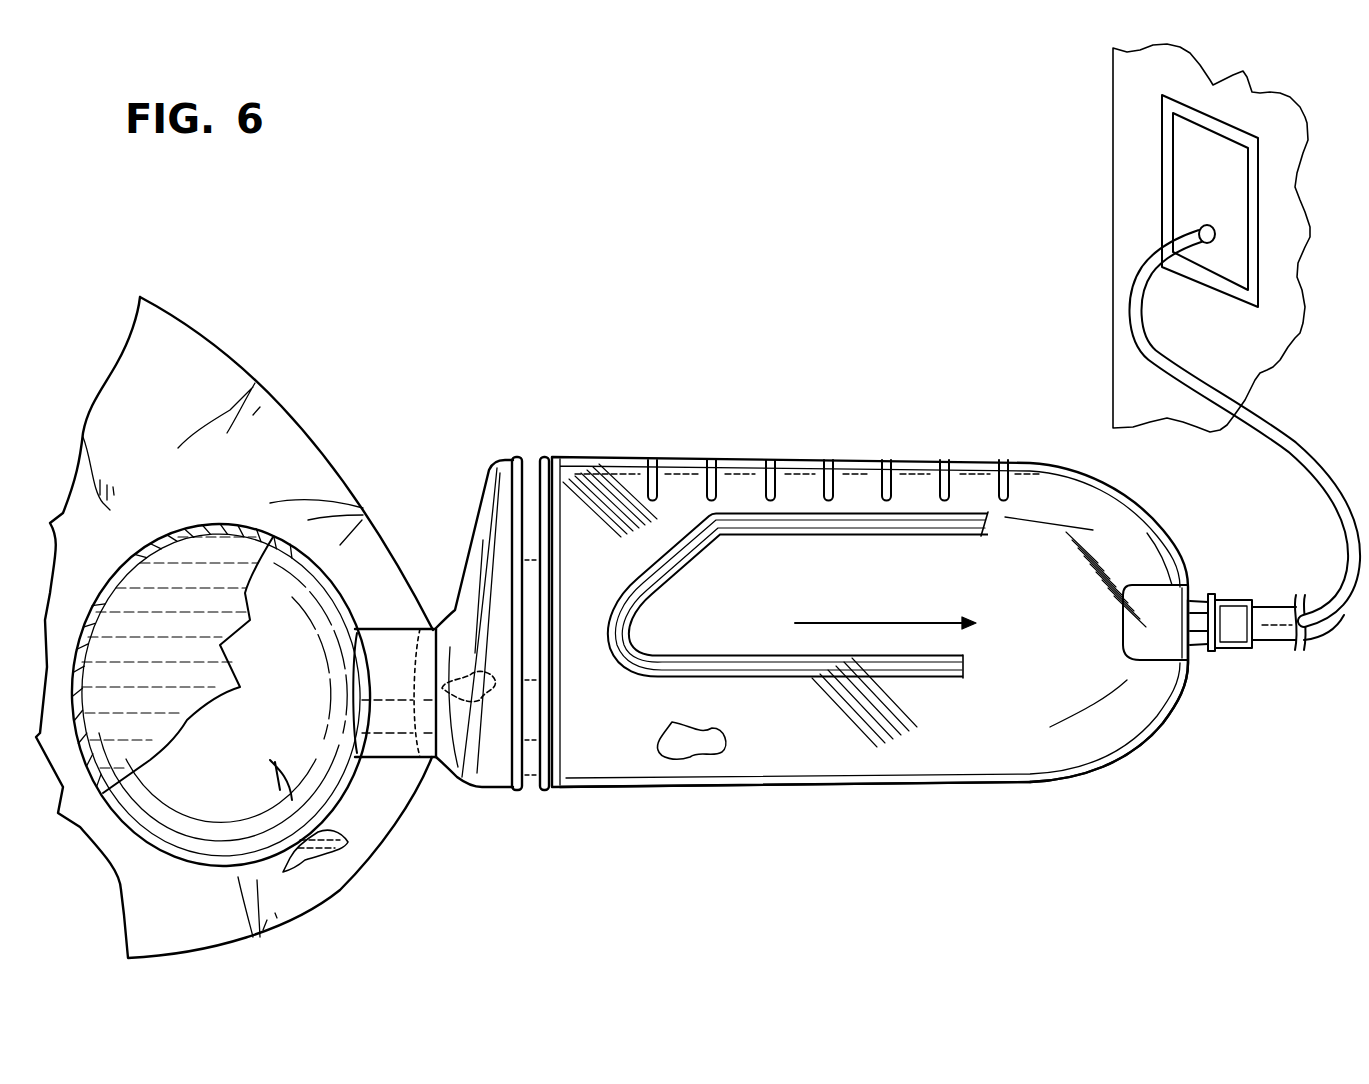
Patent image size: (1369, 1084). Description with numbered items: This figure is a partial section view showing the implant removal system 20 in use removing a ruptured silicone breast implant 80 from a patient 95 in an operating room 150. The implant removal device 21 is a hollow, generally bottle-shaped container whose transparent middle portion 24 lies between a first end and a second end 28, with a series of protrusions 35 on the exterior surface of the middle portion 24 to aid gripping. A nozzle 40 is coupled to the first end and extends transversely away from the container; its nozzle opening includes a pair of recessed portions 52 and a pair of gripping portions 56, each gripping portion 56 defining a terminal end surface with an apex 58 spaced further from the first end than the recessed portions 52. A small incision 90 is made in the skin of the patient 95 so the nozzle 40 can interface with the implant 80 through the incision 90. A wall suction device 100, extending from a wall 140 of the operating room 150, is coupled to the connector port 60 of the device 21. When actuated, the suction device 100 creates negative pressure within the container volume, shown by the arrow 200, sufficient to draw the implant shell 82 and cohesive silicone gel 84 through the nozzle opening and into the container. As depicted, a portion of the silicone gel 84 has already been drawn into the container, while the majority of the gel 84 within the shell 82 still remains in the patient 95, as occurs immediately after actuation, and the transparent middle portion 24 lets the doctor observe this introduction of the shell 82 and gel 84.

The implant removal system 20 is at (840, 390).
The implant removal device 21 is at (912, 414).
The middle portion 24 is at (850, 781).
The second end 28 is at (1170, 716).
The protrusions 35 is at (672, 545).
The nozzle 40 is at (410, 668).
The recessed portion 52 is at (363, 686).
The gripping portion 56 is at (356, 629).
The apex 58 is at (353, 636).
The connector port 60 is at (1158, 602).
The implant 80 is at (103, 830).
The shell 82 is at (172, 830).
The silicone gel 84 is at (148, 617).
The surgical incision 90 is at (421, 629).
The patient 95 is at (183, 357).
The suction device 100 is at (1272, 606).
The wall 140 is at (1190, 182).
The operating room 150 is at (1090, 830).
The arrow 200 is at (848, 622).